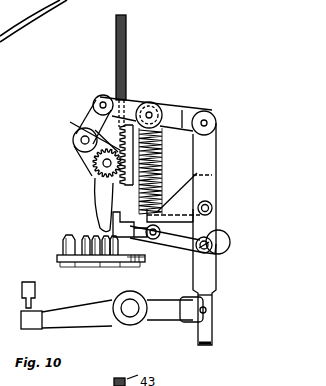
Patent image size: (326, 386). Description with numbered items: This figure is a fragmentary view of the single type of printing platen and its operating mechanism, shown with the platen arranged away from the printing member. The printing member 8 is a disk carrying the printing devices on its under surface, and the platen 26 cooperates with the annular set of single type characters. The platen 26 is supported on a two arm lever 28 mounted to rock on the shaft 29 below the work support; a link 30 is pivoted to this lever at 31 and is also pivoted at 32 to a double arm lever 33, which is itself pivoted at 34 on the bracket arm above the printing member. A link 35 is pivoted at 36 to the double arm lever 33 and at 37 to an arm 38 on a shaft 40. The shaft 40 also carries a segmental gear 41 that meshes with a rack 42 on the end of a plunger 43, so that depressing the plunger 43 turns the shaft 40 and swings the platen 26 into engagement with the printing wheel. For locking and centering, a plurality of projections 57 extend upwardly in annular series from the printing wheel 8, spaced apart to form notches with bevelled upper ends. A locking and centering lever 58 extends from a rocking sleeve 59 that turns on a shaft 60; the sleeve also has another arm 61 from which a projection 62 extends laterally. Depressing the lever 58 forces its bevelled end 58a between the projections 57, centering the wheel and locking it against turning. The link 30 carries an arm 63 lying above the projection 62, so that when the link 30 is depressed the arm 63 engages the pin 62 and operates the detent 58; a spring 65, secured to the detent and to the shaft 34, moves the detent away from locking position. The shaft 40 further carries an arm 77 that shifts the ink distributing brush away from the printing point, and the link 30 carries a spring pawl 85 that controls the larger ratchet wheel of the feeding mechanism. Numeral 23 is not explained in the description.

The drum 23 is at (6, 71).
The plunger 43 is at (128, 18).
The double arm lever 33 is at (163, 100).
The pivot 36 is at (102, 95).
The link 35 is at (85, 110).
The pivot 34 is at (150, 110).
The pivot 32 is at (208, 115).
The link 30 is at (212, 152).
The spring pawl 85 is at (213, 338).
The segmental gear 41 is at (72, 123).
The pivot 37 is at (73, 142).
The shaft 40 is at (102, 170).
The arm 38 is at (80, 158).
The rack 42 is at (140, 140).
The spring 65 is at (160, 163).
The arm 63 is at (182, 200).
The arm 61 is at (178, 233).
The locking and centering lever 58 is at (215, 253).
The rocking sleeve 59 is at (230, 242).
The shaft 60 is at (213, 236).
The bevelled end 58a is at (116, 226).
The projection 62 is at (149, 236).
The arm 77 is at (96, 205).
The projections 57 is at (68, 238).
The printing member 8 is at (60, 262).
The platen 26 is at (28, 280).
The two arm lever 28 is at (68, 312).
The shaft 29 is at (136, 302).
The pivot 31 is at (206, 313).